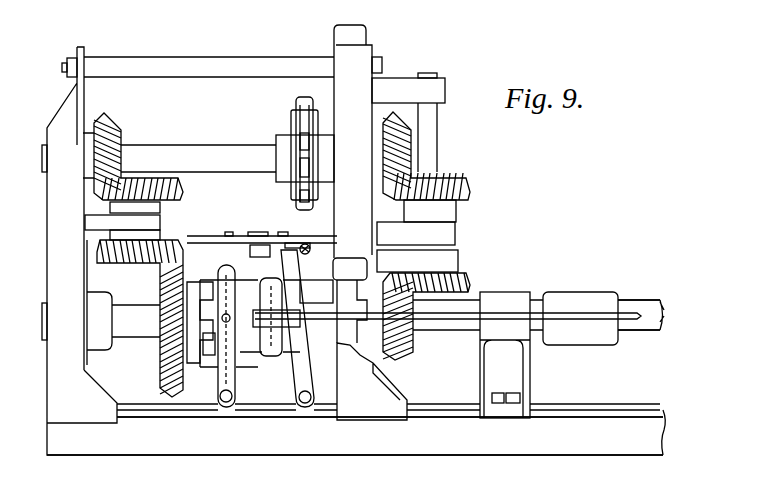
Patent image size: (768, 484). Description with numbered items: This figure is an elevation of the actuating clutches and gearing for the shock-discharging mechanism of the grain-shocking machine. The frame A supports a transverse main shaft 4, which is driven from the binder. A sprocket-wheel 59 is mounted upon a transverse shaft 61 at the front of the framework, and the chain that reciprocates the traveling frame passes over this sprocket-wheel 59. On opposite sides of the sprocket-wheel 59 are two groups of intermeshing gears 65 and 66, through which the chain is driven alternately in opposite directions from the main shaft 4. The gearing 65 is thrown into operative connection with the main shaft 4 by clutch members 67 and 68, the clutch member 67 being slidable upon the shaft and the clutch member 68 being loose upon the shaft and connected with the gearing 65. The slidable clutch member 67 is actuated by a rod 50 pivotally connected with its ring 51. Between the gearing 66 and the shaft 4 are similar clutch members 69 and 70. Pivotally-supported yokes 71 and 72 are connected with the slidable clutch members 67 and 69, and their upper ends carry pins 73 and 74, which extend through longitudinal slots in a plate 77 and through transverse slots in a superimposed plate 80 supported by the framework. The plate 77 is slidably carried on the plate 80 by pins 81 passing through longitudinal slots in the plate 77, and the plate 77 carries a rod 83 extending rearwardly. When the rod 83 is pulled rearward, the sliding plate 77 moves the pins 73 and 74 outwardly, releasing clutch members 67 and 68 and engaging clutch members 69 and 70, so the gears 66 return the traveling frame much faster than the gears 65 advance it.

The transverse main shaft 4 is at (649, 308).
The rod 50 is at (549, 316).
The ring 51 is at (271, 352).
The sprocket-wheel 59 is at (298, 106).
The transverse shaft 61 is at (172, 153).
The group of intermeshing gears 65 is at (460, 184).
The group of intermeshing gears 66 is at (172, 238).
The clutch member 67 is at (316, 291).
The clutch member 68 is at (343, 350).
The clutch member 69 is at (212, 356).
The clutch member 70 is at (190, 283).
The yoke 71 is at (300, 386).
The yoke 72 is at (219, 383).
The pin 73 is at (282, 232).
The pin 74 is at (227, 233).
The plate 77 is at (312, 242).
The superimposed plate 80 is at (246, 237).
The pins 81 is at (258, 234).
The rod 83 is at (310, 252).
The frame A is at (355, 436).